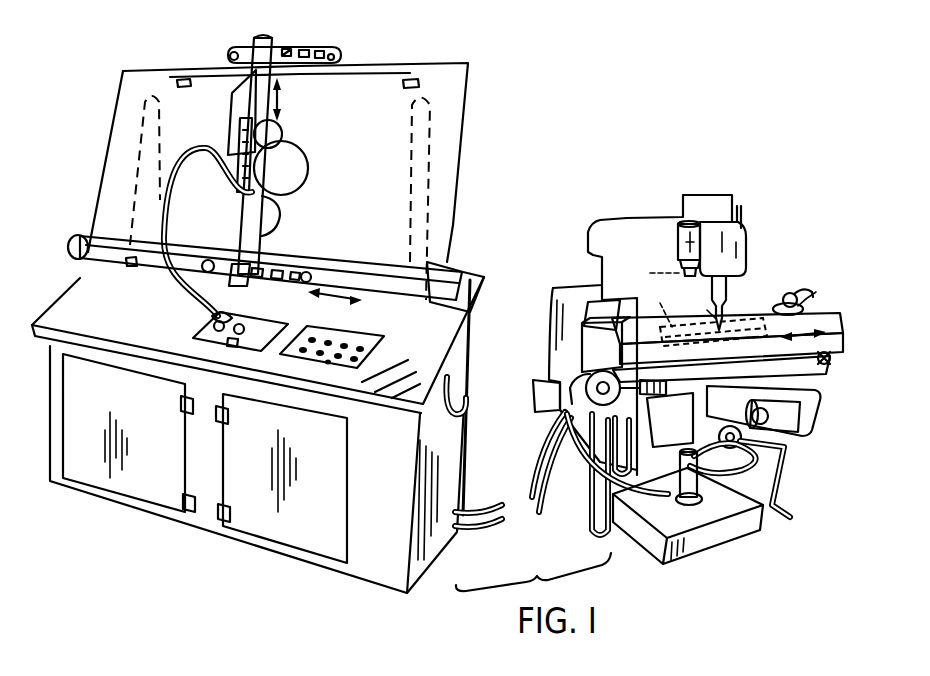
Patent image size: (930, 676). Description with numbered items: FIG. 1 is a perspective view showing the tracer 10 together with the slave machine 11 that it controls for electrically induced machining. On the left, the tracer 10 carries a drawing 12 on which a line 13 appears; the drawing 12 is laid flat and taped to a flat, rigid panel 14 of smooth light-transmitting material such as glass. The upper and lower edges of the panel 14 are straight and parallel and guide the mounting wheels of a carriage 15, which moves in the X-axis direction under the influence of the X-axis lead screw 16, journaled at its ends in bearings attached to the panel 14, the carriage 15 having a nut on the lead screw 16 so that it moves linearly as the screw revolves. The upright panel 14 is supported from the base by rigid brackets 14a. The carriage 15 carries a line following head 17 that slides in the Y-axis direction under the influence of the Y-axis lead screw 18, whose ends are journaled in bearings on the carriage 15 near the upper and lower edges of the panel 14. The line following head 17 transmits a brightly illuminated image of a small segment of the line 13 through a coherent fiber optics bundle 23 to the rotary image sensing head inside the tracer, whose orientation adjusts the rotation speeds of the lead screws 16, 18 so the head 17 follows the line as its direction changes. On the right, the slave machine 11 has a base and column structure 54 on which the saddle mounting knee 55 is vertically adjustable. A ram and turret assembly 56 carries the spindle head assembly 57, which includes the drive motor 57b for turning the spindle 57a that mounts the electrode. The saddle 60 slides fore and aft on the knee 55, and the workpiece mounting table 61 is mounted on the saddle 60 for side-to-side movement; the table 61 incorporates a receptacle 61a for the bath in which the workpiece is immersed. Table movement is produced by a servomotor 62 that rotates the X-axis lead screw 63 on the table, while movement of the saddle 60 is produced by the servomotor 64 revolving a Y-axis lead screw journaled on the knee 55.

The tracer 10 is at (492, 142).
The slave machine 11 is at (768, 254).
The drawing 12 is at (393, 80).
The line 13 is at (308, 166).
The panel 14 is at (160, 72).
The brackets 14a is at (456, 276).
The carriage 15 is at (280, 48).
The X-axis lead screw 16 is at (386, 298).
The line following head 17 is at (270, 212).
The Y-axis lead screw 18 is at (284, 142).
The coherent fiber optics bundle 23 is at (186, 288).
The base and column structure 54 is at (580, 494).
The saddle mounting knee 55 is at (688, 516).
The ram and turret assembly 56 is at (609, 234).
The spindle head assembly 57 is at (745, 236).
The spindle 57a is at (730, 300).
The drive motor 57b is at (705, 235).
The saddle 60 is at (683, 489).
The workpiece mounting table 61 is at (832, 356).
The receptacle 61a is at (834, 330).
The servomotor 62 is at (560, 360).
The X-axis lead screw 63 is at (670, 420).
The servomotor 64 is at (810, 436).